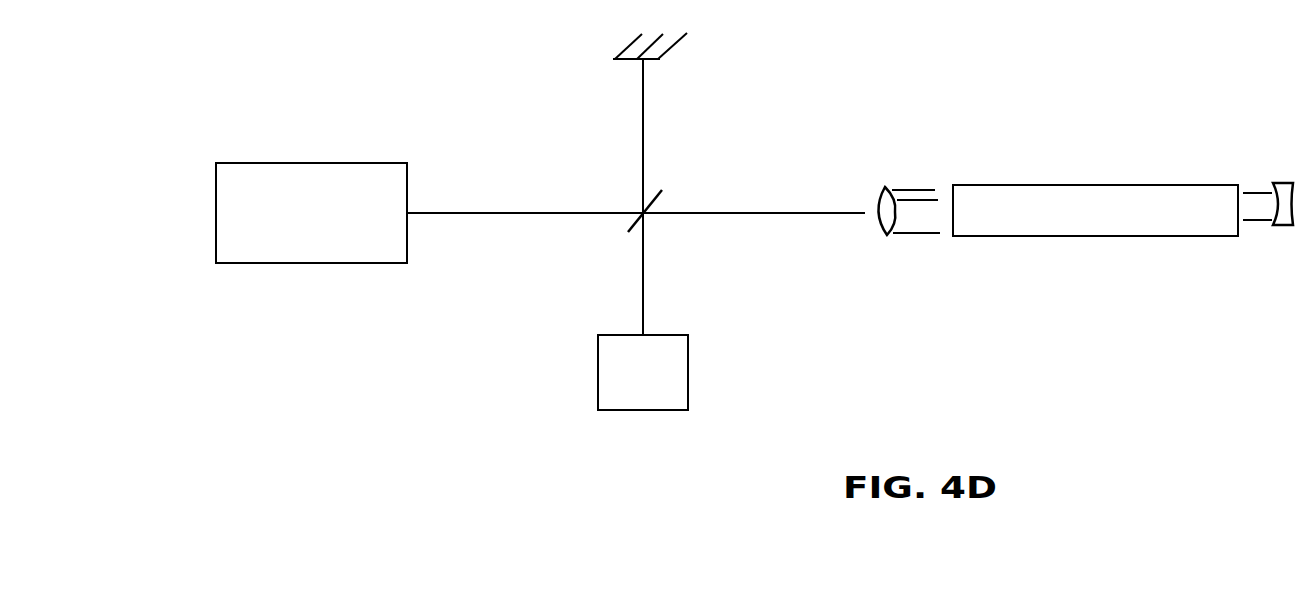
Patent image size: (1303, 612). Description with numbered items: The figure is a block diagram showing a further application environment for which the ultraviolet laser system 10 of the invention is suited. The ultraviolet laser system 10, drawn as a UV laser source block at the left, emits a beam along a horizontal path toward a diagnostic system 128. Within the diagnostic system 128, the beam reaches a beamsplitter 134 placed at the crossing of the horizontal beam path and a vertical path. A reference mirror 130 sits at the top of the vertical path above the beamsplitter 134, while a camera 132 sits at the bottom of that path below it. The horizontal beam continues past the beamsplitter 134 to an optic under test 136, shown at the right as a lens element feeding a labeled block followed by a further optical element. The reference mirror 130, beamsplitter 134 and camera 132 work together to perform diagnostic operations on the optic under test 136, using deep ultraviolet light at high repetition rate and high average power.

The ultraviolet laser system 10 is at (260, 277).
The diagnostic system 128 is at (406, 361).
The reference mirror 130 is at (713, 47).
The camera 132 is at (695, 366).
The beamsplitter 134 is at (676, 186).
The optic under test 136 is at (1085, 173).